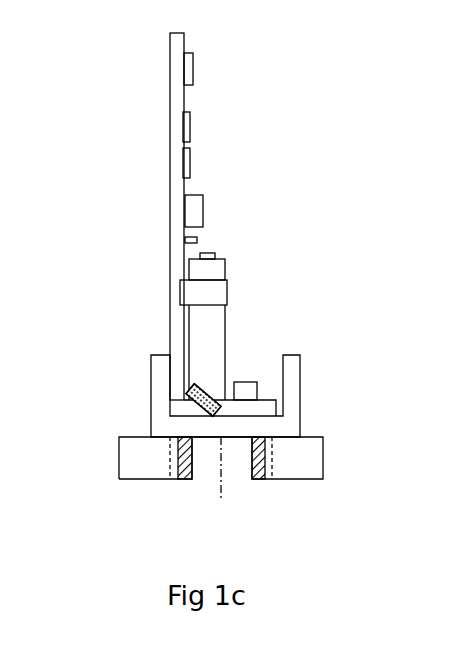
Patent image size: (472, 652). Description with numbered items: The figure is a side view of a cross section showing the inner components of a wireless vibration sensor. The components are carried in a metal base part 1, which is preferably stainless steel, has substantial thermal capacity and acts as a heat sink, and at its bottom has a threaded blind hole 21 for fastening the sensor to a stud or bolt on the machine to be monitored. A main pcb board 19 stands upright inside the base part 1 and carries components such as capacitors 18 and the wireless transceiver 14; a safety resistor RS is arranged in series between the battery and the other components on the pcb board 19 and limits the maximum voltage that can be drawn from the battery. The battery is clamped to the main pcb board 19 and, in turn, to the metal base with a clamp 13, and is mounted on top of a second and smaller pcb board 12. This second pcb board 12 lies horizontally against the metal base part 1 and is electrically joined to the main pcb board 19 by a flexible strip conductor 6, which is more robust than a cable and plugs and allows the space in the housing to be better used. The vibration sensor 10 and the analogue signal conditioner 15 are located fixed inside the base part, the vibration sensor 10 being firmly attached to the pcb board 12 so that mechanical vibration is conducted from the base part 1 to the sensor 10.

The base part 1 is at (117, 450).
The flexible strip conductor 6 is at (187, 392).
The vibration sensor 10 is at (263, 390).
The second pcb board 12 is at (255, 408).
The clamp 13 is at (202, 293).
The wireless transceiver 14 is at (187, 65).
The analogue signal conditioner 15 is at (230, 408).
The capacitors 18 is at (192, 210).
The pcb board 19 is at (183, 128).
The blind hole 21 is at (197, 480).
The safety resistor RS is at (190, 240).